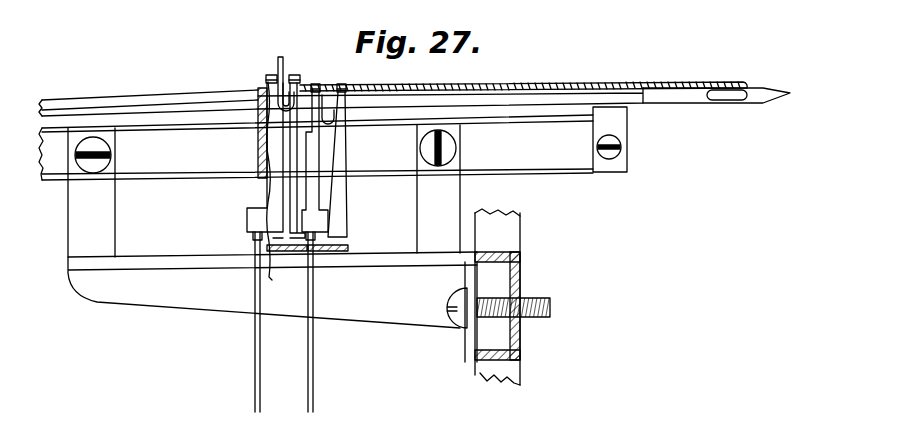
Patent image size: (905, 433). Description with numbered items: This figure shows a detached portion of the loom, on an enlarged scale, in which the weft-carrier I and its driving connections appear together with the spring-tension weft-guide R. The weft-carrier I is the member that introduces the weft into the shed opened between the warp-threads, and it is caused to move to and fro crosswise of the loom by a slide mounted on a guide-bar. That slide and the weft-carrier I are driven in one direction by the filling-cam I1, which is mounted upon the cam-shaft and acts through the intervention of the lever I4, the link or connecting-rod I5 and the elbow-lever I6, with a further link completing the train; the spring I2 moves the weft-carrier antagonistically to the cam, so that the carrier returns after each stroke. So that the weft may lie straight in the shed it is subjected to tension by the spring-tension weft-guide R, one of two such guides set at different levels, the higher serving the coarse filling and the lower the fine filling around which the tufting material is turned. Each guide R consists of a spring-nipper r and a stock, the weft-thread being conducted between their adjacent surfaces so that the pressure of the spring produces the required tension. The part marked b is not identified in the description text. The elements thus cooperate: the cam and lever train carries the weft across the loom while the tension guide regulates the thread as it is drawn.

The weft-carrier I is at (414, 101).
The filling-cam I1 is at (258, 203).
The spring I2 is at (313, 67).
The lever I4 is at (287, 69).
The link or connecting-rod I5 is at (328, 236).
The elbow-lever I6 is at (319, 346).
The spring-tension weft-guide R is at (243, 219).
The spring-nipper r is at (325, 171).
The toothed plate tip b is at (772, 78).